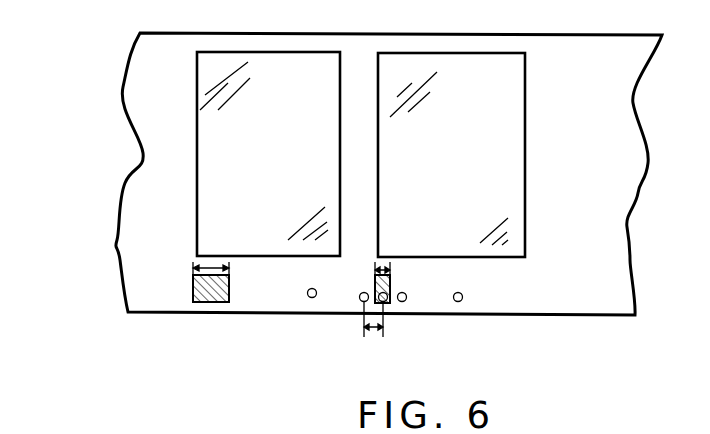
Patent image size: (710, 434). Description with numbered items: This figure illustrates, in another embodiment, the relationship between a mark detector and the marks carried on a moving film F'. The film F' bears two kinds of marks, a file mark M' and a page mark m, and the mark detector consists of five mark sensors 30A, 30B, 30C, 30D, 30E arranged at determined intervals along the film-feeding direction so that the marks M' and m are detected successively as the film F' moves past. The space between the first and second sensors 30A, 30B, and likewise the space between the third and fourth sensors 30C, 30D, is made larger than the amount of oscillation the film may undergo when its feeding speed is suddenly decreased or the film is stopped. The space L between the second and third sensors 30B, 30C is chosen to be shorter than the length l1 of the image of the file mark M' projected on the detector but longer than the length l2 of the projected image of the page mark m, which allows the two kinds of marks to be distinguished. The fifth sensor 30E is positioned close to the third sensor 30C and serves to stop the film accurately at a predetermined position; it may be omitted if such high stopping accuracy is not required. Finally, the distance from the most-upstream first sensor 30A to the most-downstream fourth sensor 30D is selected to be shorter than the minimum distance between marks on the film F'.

The moving film F' is at (406, 174).
The file mark M' is at (207, 318).
The length of the projected image of the file mark l1 is at (214, 268).
The page mark m is at (372, 277).
The length of the projected image of the page mark l2 is at (388, 263).
The space between the second and third sensors L is at (373, 330).
The first mark sensor 30A is at (309, 297).
The second mark sensor 30B is at (361, 301).
The third mark sensor 30C is at (386, 302).
The fourth mark sensor 30D is at (463, 297).
The fifth mark sensor 30E is at (407, 297).